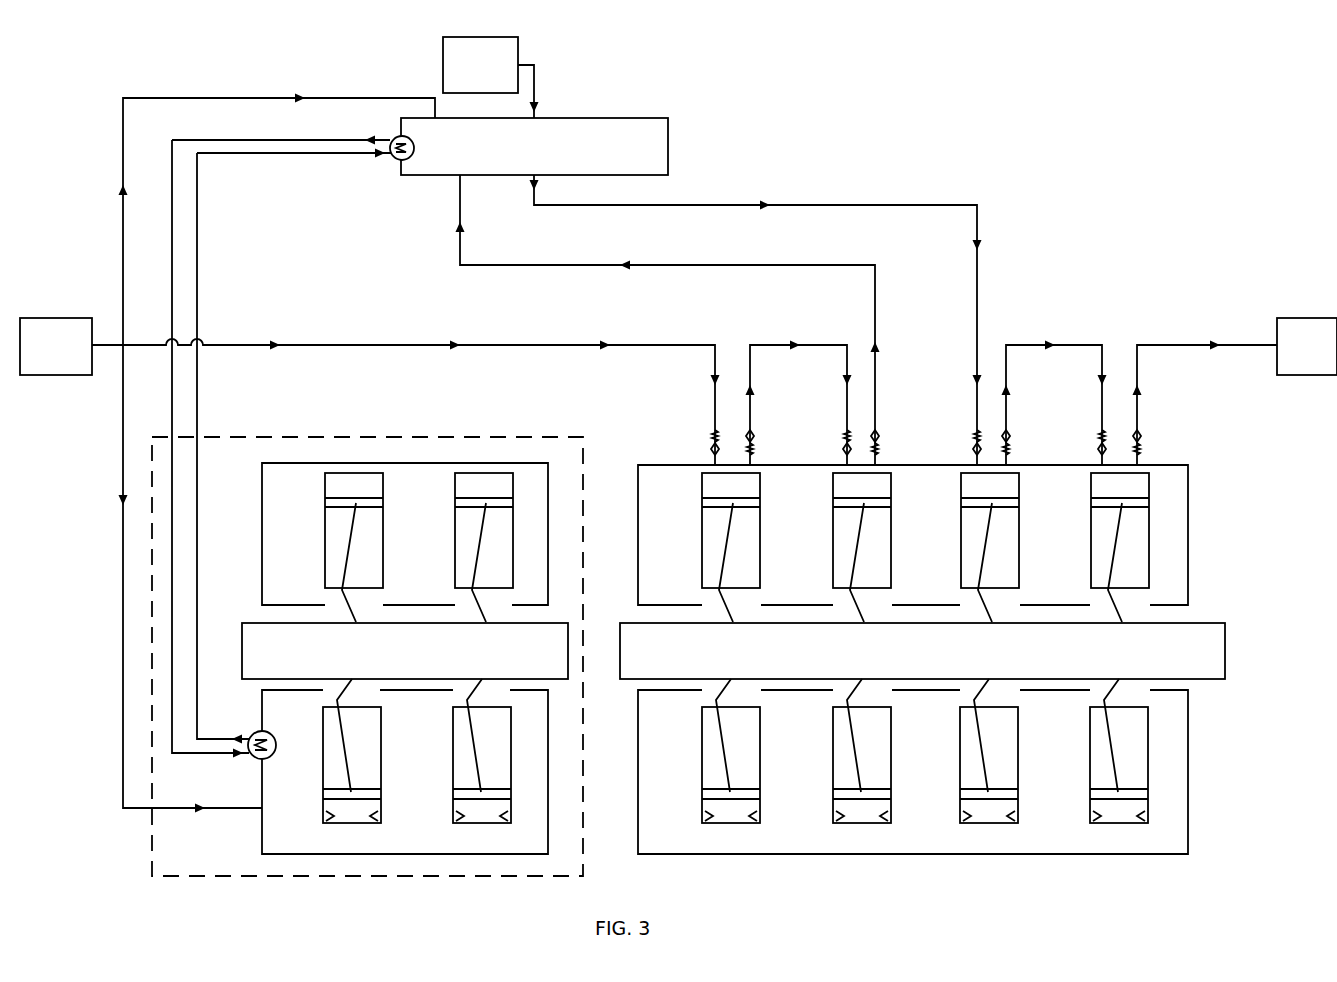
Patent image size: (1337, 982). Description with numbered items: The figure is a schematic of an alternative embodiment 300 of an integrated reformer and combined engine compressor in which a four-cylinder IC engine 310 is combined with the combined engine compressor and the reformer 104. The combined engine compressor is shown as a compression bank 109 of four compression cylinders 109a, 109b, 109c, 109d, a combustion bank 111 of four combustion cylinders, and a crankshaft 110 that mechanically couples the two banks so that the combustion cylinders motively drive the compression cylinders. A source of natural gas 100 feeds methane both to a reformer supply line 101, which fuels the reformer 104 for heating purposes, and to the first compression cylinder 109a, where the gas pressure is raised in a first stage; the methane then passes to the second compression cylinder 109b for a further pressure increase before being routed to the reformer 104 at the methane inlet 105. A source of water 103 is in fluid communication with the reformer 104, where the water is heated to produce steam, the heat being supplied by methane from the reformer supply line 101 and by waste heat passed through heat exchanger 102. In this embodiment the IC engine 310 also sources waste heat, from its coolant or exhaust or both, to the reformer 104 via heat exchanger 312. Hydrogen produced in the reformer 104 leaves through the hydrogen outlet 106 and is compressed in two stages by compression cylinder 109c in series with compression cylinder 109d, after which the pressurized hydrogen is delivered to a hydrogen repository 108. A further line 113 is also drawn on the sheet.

The source of natural gas 100 is at (370, 391).
The reformer supply line 101 is at (120, 234).
The heat exchanger 102 is at (394, 162).
The source of water 103 is at (491, 77).
The reformer 104 is at (534, 146).
The methane inlet 105 is at (464, 196).
The hydrogen outlet 106 is at (600, 208).
The hydrogen repository 108 is at (1235, 391).
The compression bank 109 is at (955, 482).
The first compression cylinder 109a is at (702, 548).
The second compression cylinder 109b is at (831, 563).
The compression cylinder 109c is at (1022, 565).
The compression cylinder 109d is at (1152, 569).
The crankshaft 110 is at (1228, 648).
The combustion bank 111 is at (1190, 789).
The bypass line 113 is at (121, 623).
The embodiment 300 is at (1073, 182).
The IC engine 310 is at (222, 880).
The heat exchanger 312 is at (250, 733).